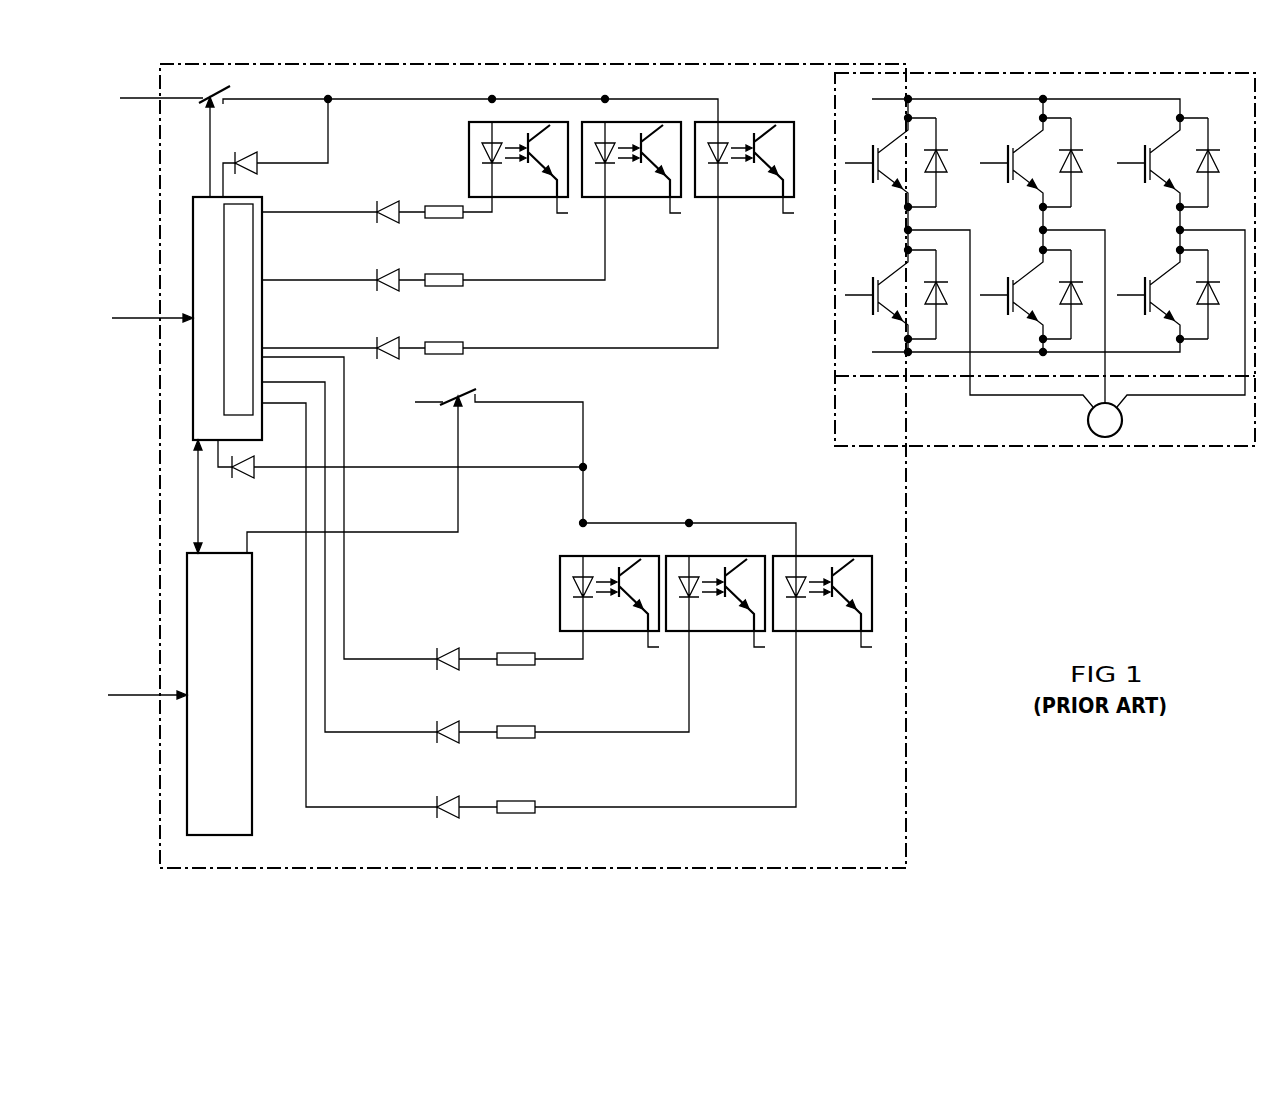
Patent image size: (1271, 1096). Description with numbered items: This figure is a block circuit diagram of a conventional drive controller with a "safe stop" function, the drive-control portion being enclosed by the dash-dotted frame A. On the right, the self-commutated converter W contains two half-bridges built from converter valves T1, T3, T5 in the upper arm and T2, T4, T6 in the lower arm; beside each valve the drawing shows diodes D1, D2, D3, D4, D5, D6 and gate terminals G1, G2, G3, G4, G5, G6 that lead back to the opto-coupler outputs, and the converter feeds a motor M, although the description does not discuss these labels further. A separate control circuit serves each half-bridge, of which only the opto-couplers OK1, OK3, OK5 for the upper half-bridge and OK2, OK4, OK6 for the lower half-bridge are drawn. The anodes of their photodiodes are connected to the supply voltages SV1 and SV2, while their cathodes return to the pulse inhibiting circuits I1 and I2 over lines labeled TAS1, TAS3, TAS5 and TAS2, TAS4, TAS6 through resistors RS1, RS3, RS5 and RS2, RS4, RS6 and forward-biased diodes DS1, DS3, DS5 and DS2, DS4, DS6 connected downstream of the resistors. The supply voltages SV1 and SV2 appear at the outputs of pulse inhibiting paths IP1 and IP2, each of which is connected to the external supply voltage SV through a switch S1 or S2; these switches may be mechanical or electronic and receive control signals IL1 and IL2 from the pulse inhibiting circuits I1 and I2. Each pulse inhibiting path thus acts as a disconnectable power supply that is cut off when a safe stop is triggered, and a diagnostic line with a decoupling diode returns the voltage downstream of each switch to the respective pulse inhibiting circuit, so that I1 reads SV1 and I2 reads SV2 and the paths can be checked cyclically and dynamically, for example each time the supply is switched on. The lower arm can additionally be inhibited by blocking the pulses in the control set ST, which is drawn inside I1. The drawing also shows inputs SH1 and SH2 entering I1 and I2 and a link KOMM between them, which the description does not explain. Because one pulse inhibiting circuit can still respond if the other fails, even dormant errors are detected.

The drive control unit A is at (888, 814).
The supply voltage SV is at (281, 244).
The switch S1 is at (203, 103).
The switch S2 is at (466, 396).
The pulse inhibiting path IP1 is at (262, 96).
The pulse inhibiting path IP2 is at (533, 404).
The supply voltage SV1 is at (365, 96).
The supply voltage SV2 is at (583, 487).
The signal IL1 is at (194, 147).
The signal IL2 is at (354, 474).
The pulse inhibiting circuit I1 is at (227, 318).
The pulse inhibiting circuit I2 is at (219, 694).
The control set ST is at (239, 309).
The first safety shutdown input SH1 is at (152, 307).
The second safety shutdown input SH2 is at (147, 684).
The communication link KOMM is at (185, 496).
The driver signal line 1 TAS1 is at (377, 198).
The driver signal line 2 TAS2 is at (422, 508).
The driver signal line 3 TAS3 is at (433, 238).
The driver signal line 4 TAS4 is at (475, 557).
The driver signal line 5 TAS5 is at (490, 272).
The driver signal line 6 TAS6 is at (529, 605).
The forward-biased diode DS1 is at (386, 200).
The forward-biased diode DS2 is at (450, 665).
The forward-biased diode DS3 is at (386, 268).
The forward-biased diode DS4 is at (450, 738).
The forward-biased diode DS5 is at (386, 336).
The forward-biased diode DS6 is at (450, 813).
The resistor RS1 is at (441, 202).
The resistor RS2 is at (517, 665).
The resistor RS3 is at (441, 270).
The resistor RS4 is at (517, 738).
The resistor RS5 is at (441, 338).
The resistor RS6 is at (517, 813).
The opto-coupler OK1 is at (518, 197).
The opto-coupler OK2 is at (609, 631).
The opto-coupler OK3 is at (631, 197).
The opto-coupler OK4 is at (715, 631).
The opto-coupler OK5 is at (744, 197).
The opto-coupler OK6 is at (822, 631).
The gate terminal 1 G1 is at (716, 183).
The gate terminal 2 G2 is at (762, 465).
The gate terminal 3 G3 is at (840, 183).
The gate terminal 4 G4 is at (882, 465).
The gate terminal 5 G5 is at (965, 183).
The gate terminal 6 G6 is at (1004, 465).
The converter valve T1 is at (884, 166).
The converter valve T2 is at (884, 298).
The converter valve T3 is at (1019, 166).
The converter valve T4 is at (1019, 298).
The converter valve T5 is at (1156, 166).
The converter valve T6 is at (1156, 298).
The freewheeling diode 1 D1 is at (948, 180).
The freewheeling diode 2 D2 is at (948, 312).
The freewheeling diode 3 D3 is at (1083, 180).
The freewheeling diode 4 D4 is at (1083, 312).
The freewheeling diode 5 D5 is at (1220, 180).
The freewheeling diode 6 D6 is at (1220, 312).
The self-commutated converter W is at (1057, 263).
The motor M is at (1017, 447).